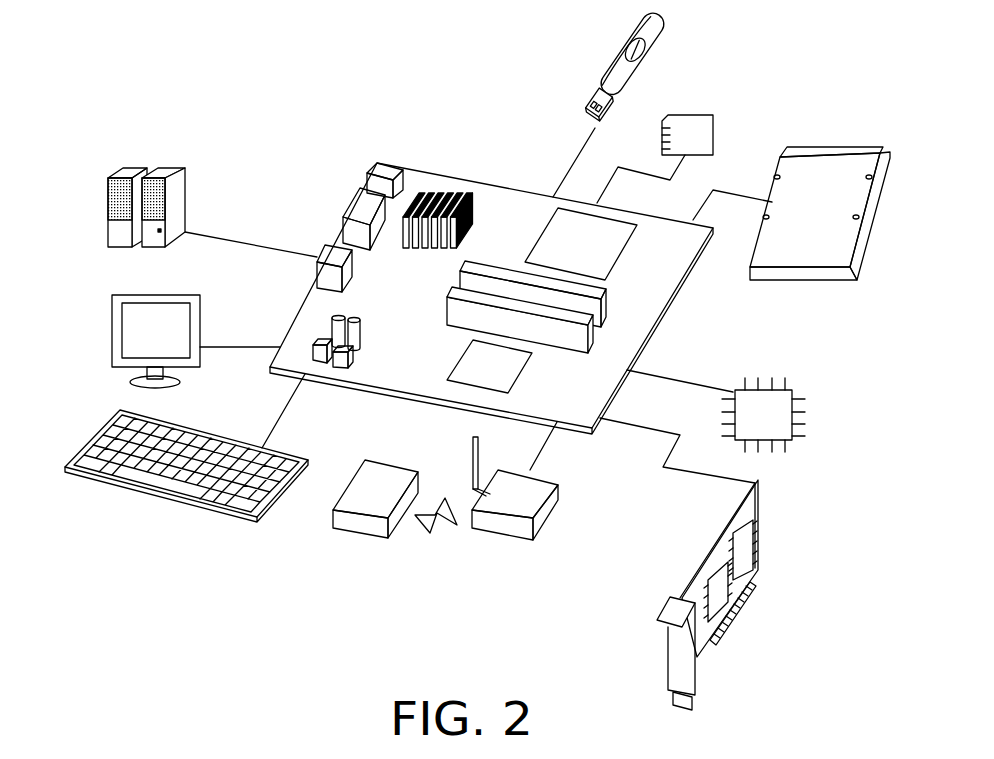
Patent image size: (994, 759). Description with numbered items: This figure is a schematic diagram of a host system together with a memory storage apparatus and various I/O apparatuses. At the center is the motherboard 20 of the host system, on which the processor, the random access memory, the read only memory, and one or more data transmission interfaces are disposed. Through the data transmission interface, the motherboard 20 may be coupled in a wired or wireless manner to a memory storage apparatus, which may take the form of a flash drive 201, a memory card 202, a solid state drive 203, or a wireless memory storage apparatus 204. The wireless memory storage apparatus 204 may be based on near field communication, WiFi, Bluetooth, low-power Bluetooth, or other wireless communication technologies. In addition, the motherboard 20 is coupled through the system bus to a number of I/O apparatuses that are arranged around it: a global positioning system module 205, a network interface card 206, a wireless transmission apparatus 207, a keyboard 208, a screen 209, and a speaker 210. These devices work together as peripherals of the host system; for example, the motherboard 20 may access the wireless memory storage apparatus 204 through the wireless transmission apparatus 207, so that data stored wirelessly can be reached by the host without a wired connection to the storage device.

The motherboard 20 is at (493, 202).
The flash drive 201 is at (617, 55).
The memory card 202 is at (715, 127).
The solid state drive 203 is at (837, 147).
The wireless memory storage apparatus 204 is at (347, 477).
The global positioning system module 205 is at (795, 415).
The network interface card 206 is at (760, 538).
The wireless transmission apparatus 207 is at (553, 522).
The keyboard 208 is at (192, 503).
The screen 209 is at (110, 348).
The speaker 210 is at (107, 233).